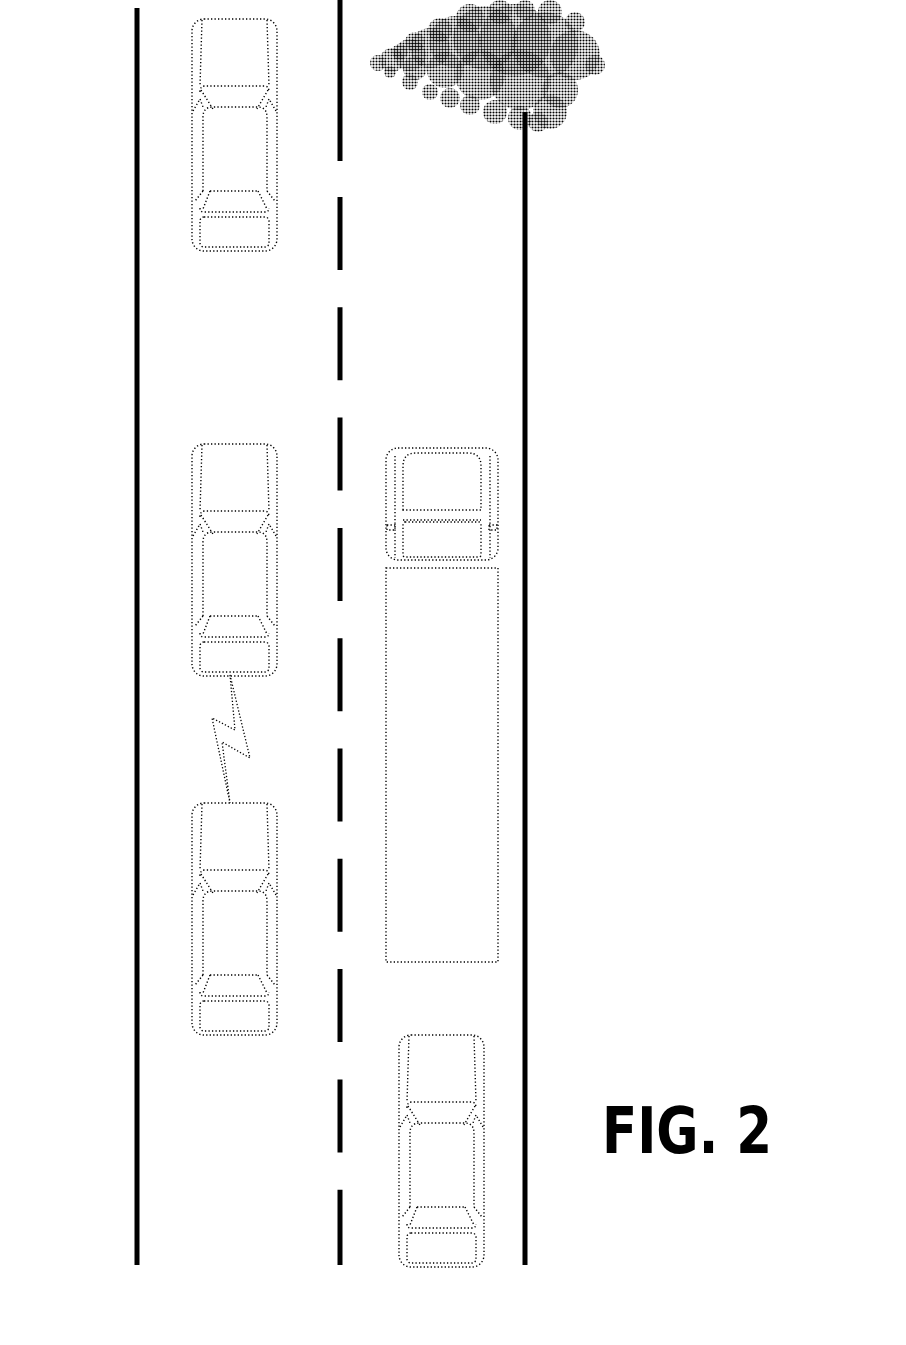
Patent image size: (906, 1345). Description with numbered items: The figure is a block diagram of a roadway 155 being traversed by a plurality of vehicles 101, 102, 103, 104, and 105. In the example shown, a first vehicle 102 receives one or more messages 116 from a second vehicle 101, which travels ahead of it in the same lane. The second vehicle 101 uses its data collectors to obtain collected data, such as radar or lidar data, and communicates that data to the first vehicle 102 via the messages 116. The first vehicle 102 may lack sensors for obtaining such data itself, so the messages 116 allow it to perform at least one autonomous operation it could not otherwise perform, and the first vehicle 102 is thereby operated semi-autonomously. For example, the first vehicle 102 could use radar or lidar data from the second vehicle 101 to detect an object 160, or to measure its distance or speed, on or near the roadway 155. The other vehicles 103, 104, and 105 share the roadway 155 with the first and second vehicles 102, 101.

The second vehicle 101 is at (221, 611).
The first vehicle 102 is at (221, 965).
The vehicle 103 is at (428, 1195).
The vehicle 104 is at (428, 775).
The vehicle 105 is at (221, 181).
The message 116 is at (212, 734).
The roadway 155 is at (230, 1232).
The object 160 is at (600, 63).